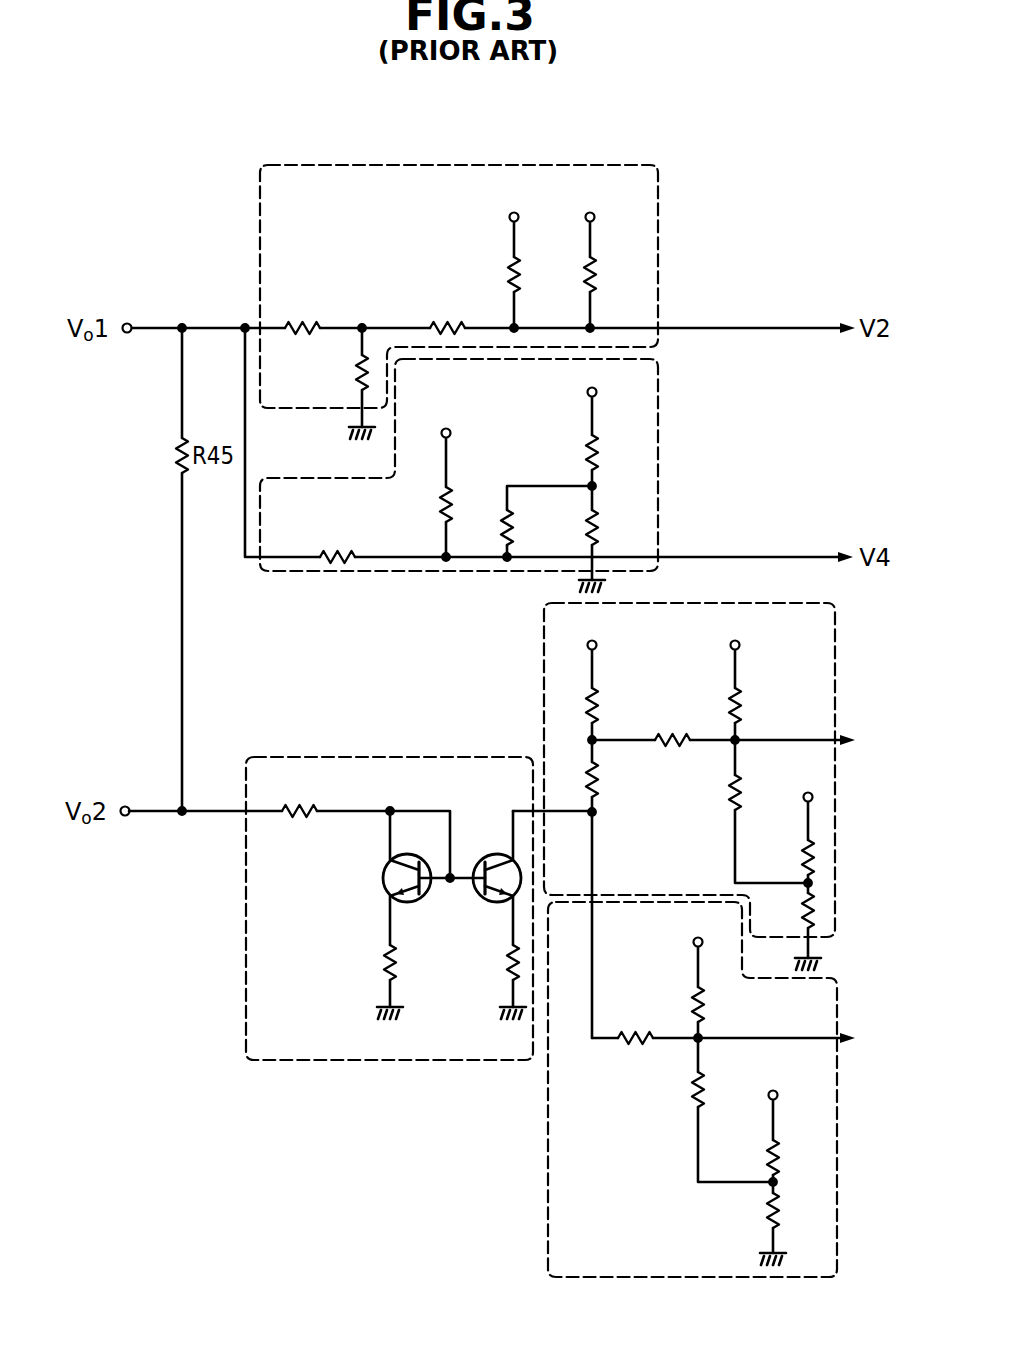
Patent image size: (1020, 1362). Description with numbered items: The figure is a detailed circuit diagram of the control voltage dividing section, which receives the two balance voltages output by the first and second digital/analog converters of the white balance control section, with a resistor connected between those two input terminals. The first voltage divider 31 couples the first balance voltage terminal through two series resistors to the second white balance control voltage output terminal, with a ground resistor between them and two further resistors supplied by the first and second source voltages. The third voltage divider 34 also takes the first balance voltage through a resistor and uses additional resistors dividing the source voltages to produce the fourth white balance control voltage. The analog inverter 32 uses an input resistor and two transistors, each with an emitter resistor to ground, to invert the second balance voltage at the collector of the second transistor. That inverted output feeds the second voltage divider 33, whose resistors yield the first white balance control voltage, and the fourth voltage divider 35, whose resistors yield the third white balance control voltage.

The first voltage divider 31 is at (658, 253).
The analog inverter 32 is at (390, 757).
The second voltage divider 33 is at (835, 826).
The third voltage divider 34 is at (658, 478).
The fourth voltage divider 35 is at (837, 1170).